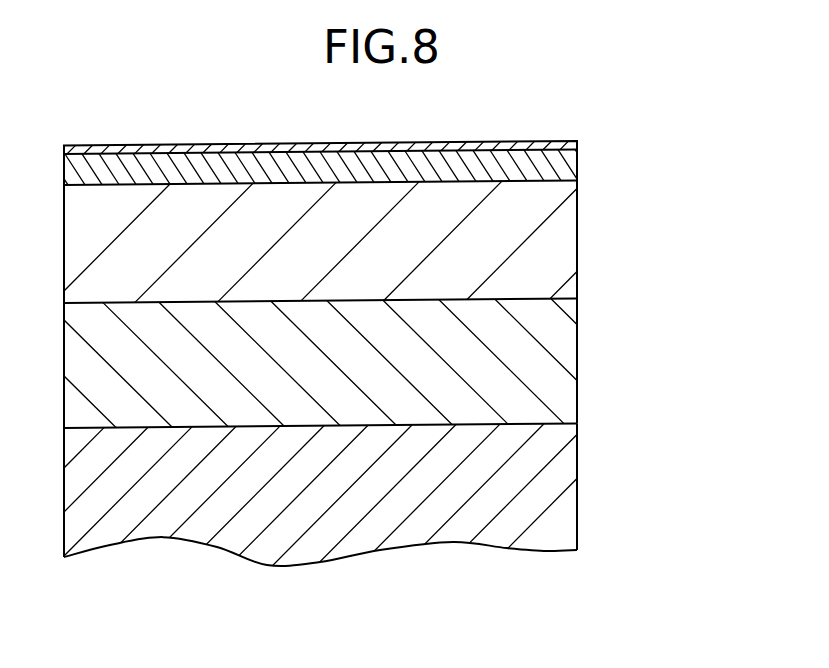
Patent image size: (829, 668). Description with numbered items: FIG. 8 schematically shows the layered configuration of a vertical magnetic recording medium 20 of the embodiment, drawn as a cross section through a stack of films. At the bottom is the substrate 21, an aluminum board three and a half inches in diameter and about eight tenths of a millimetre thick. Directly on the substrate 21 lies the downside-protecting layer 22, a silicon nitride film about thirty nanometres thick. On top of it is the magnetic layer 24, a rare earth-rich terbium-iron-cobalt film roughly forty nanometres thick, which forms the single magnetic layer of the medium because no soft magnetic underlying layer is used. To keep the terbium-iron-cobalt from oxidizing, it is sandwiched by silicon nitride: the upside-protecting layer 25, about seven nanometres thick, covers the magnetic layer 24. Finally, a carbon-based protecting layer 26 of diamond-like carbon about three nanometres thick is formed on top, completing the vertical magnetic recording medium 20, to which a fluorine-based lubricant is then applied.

The vertical magnetic recording medium 20 is at (541, 90).
The substrate 21 is at (577, 503).
The downside-protecting layer 22 is at (577, 380).
The vertical magnetic recording layer 24 is at (577, 240).
The upside-protecting layer 25 is at (577, 169).
The carbon-based protecting layer 26 is at (577, 145).